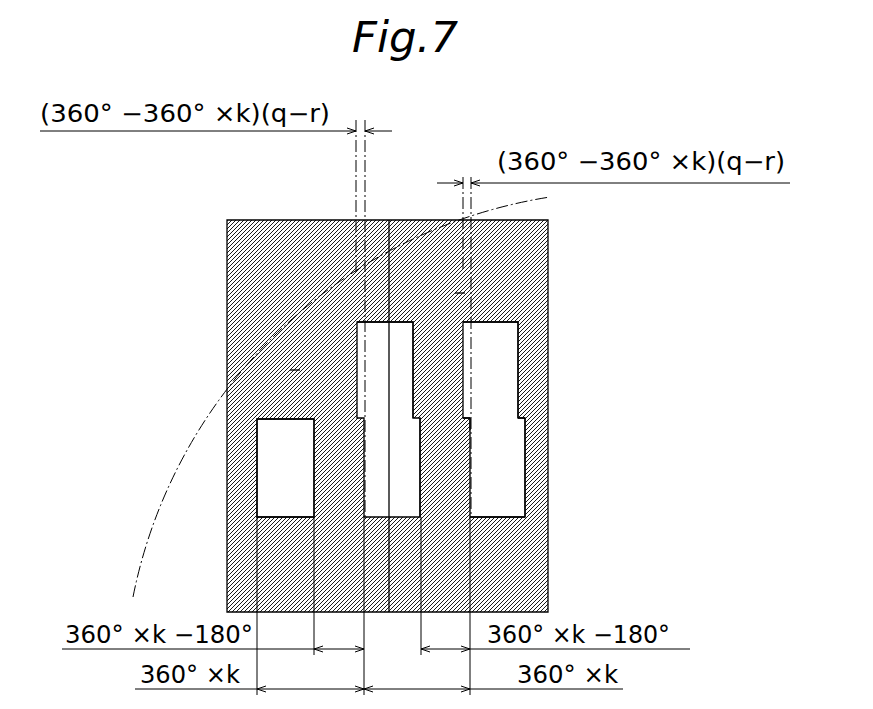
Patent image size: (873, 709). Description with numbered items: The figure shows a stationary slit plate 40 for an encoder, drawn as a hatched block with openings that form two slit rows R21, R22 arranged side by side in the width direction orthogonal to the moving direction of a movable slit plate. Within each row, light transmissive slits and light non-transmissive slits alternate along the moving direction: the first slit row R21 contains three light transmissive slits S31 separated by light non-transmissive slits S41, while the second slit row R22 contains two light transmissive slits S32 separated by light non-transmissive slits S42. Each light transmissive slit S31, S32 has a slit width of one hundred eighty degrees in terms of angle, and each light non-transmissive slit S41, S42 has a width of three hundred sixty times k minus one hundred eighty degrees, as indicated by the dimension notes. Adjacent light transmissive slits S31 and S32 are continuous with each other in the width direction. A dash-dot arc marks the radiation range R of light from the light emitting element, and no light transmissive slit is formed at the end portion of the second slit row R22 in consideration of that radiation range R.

The stationary slit plate 40 is at (555, 270).
The radiation range of light R is at (178, 460).
The light non-transmissive slit S42 is at (290, 370).
The light transmissive slit S32 is at (507, 337).
The second slit row R22 is at (508, 388).
The light transmissive slit S31 is at (508, 445).
The first slit row R21 is at (513, 497).
The light non-transmissive slit S41 is at (342, 505).